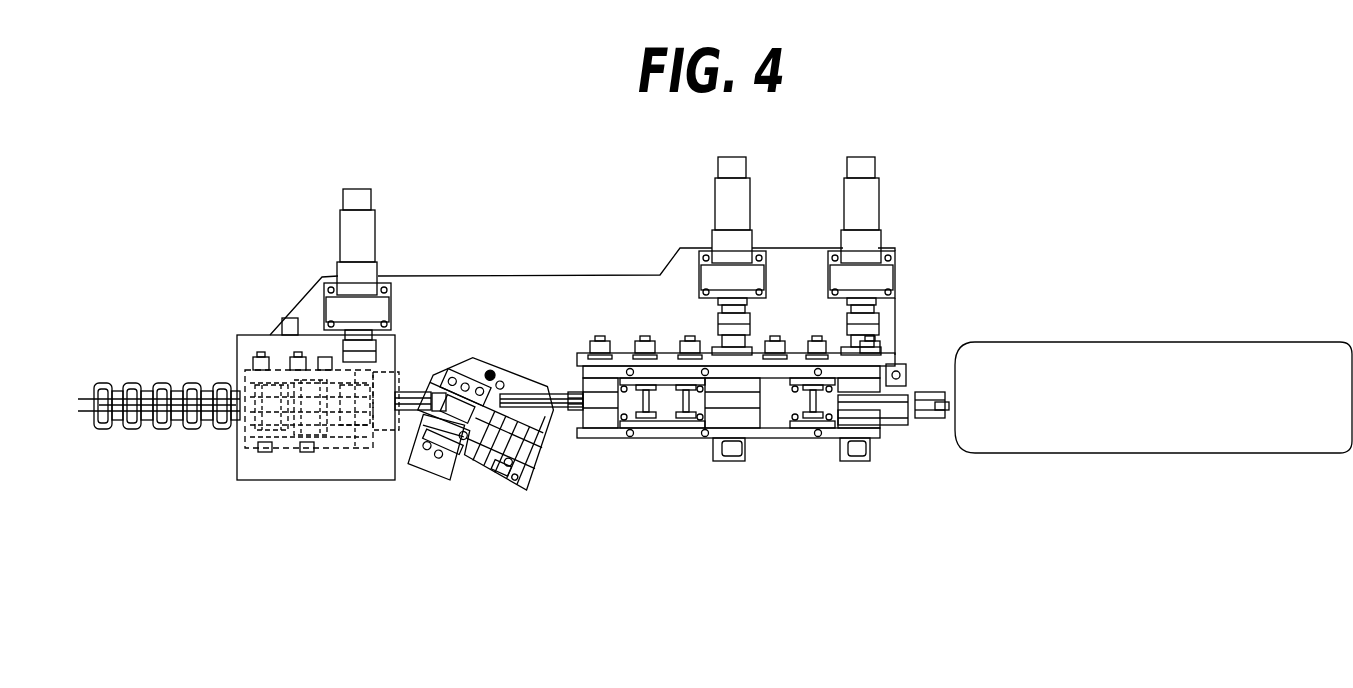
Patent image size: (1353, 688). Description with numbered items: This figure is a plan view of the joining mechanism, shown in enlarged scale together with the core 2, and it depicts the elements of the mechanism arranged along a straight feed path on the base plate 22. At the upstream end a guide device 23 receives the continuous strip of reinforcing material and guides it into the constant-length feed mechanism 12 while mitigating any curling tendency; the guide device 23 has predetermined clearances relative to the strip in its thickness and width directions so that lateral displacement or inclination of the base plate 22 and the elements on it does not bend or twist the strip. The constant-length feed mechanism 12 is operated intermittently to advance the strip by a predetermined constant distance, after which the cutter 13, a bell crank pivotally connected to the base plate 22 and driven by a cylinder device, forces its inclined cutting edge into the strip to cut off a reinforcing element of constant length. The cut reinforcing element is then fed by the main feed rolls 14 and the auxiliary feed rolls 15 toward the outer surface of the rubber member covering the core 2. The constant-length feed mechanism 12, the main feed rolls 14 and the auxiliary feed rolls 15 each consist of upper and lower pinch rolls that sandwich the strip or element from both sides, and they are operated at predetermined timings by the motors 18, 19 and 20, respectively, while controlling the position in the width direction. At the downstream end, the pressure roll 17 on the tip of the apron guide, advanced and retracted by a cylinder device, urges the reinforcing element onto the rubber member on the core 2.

The core 2 is at (1197, 455).
The constant-length feed mechanism 12 is at (313, 482).
The cutter 13 is at (471, 486).
The main feed rolls 14 is at (672, 454).
The auxiliary feed rolls 15 is at (822, 450).
The pressure roll 17 is at (940, 392).
The motor 18 is at (363, 232).
The motor 19 is at (727, 201).
The motor 20 is at (857, 201).
The base plate 22 is at (545, 298).
The guide device 23 is at (165, 365).